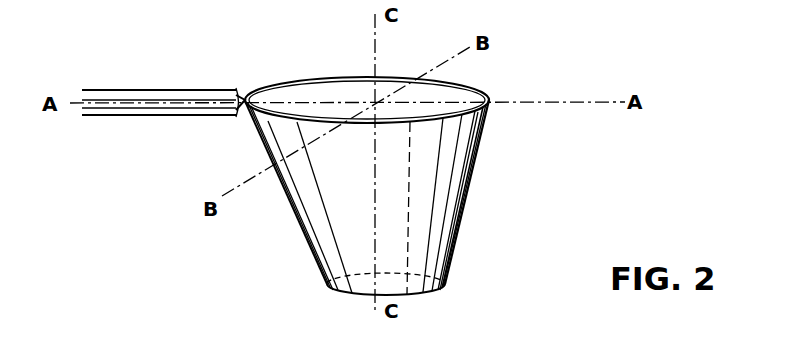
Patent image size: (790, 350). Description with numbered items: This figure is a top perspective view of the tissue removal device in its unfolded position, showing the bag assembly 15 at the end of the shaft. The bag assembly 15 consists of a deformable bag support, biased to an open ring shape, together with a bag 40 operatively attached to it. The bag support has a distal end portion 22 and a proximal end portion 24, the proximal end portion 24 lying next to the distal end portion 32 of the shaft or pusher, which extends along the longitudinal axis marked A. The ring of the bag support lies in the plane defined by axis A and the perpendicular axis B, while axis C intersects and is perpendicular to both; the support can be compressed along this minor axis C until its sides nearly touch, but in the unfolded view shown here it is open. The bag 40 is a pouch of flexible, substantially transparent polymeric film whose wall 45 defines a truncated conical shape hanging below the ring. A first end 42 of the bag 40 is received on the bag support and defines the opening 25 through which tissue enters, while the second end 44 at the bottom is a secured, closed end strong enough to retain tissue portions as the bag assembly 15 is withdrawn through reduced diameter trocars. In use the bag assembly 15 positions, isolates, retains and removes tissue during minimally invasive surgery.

The bag assembly 15 is at (487, 181).
The distal end portion 22 is at (490, 100).
The proximal end portion 24 is at (245, 98).
The opening 25 is at (363, 89).
The distal end portion 32 is at (239, 95).
The bag 40 is at (447, 252).
The first end 42 is at (470, 123).
The second end 44 is at (418, 300).
The wall 45 is at (310, 191).